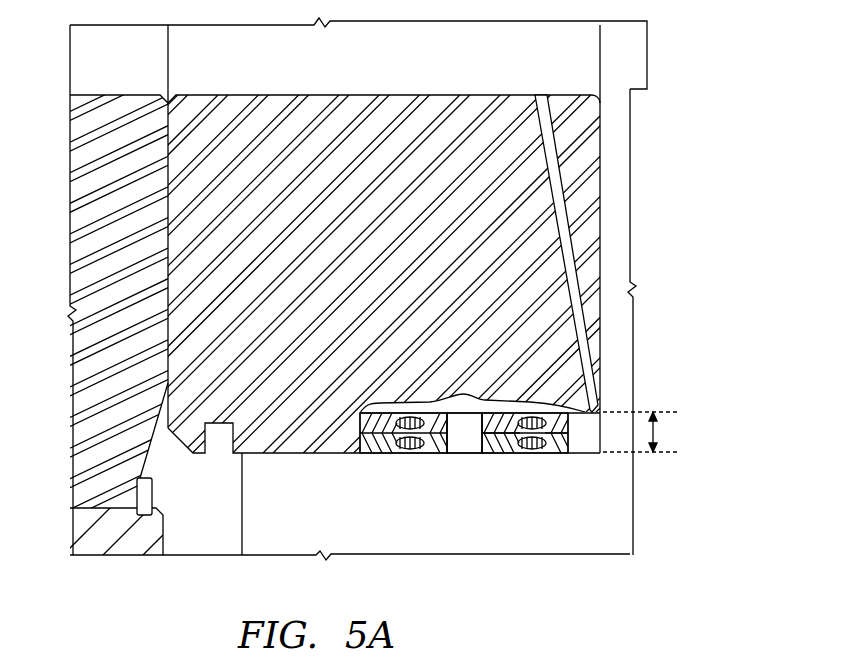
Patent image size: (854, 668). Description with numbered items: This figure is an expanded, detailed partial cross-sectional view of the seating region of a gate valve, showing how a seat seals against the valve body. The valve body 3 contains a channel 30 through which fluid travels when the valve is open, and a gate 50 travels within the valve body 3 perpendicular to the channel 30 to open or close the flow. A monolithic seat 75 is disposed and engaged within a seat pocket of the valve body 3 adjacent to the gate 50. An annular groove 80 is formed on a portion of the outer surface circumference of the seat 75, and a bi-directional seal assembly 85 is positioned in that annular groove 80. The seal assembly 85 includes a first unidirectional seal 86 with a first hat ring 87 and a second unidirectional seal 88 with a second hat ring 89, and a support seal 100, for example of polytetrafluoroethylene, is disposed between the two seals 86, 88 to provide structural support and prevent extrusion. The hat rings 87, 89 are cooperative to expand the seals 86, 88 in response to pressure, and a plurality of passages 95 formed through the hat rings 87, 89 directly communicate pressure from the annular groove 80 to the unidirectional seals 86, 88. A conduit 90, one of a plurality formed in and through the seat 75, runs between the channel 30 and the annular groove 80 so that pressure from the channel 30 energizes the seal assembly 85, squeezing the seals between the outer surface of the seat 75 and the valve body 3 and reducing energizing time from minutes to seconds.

The valve body 3 is at (518, 532).
The channel 30 is at (500, 68).
The gate 50 is at (97, 269).
The seat 75 is at (505, 235).
The annular groove 80 is at (657, 435).
The seal assembly 85 is at (475, 388).
The first unidirectional seal 86 is at (503, 453).
The first hat ring 87 is at (557, 453).
The second unidirectional seal 88 is at (432, 453).
The second hat ring 89 is at (357, 440).
The conduit 90 is at (557, 175).
The passages 95 is at (372, 453).
The support seal 100 is at (467, 447).